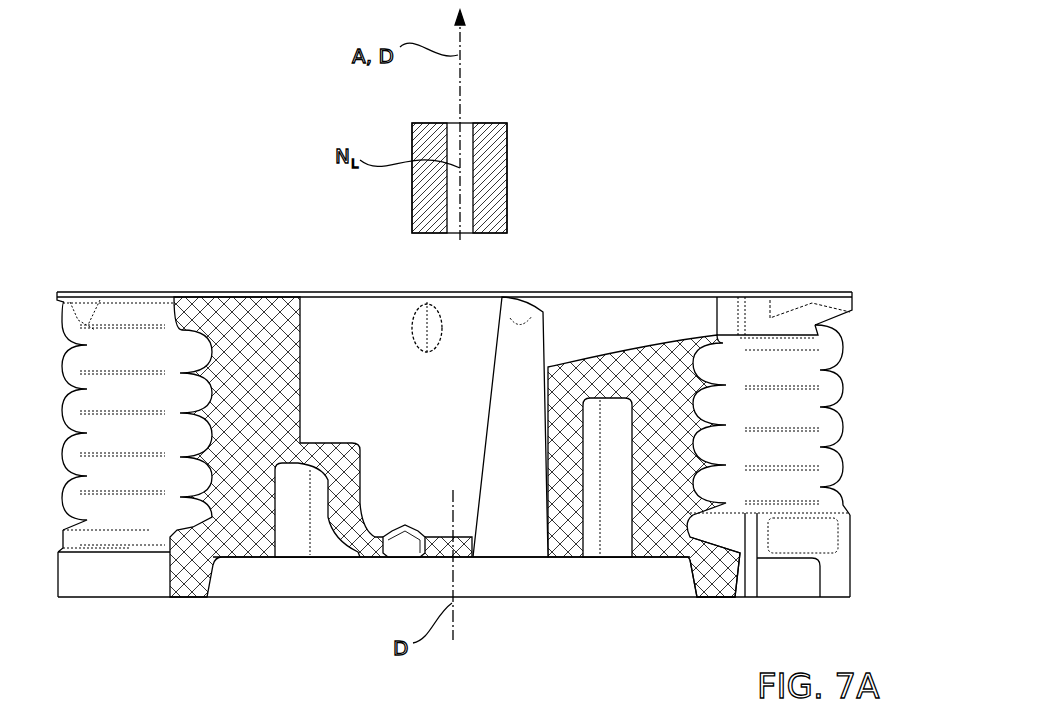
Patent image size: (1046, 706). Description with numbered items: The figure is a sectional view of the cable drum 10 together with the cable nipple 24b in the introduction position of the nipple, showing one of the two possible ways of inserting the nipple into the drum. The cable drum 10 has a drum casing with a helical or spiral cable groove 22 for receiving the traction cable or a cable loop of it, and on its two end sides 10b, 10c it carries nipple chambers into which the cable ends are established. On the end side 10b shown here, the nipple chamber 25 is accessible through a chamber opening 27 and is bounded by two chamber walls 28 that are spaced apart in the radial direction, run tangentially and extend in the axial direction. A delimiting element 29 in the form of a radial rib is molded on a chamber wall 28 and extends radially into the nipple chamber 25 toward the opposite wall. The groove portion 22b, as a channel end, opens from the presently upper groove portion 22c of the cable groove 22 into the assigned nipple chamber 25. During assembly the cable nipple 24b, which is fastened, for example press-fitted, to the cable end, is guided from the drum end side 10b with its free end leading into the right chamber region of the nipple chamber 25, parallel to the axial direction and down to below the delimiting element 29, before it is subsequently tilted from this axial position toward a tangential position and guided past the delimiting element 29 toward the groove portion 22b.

The cable drum 10 is at (150, 582).
The end side 10b is at (762, 292).
The end side 10c is at (713, 597).
The cable groove 22 is at (107, 475).
The groove portion 22b is at (648, 318).
The upper groove portion 22c is at (813, 328).
The cable nipple 24b is at (493, 150).
The nipple chamber 25 is at (438, 420).
The chamber walls 28 is at (363, 383).
The chamber opening 27 is at (503, 292).
The delimiting element 29 is at (413, 330).